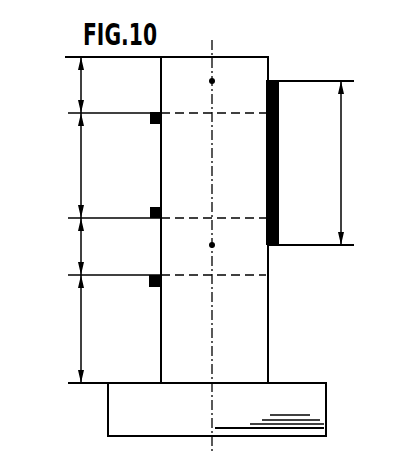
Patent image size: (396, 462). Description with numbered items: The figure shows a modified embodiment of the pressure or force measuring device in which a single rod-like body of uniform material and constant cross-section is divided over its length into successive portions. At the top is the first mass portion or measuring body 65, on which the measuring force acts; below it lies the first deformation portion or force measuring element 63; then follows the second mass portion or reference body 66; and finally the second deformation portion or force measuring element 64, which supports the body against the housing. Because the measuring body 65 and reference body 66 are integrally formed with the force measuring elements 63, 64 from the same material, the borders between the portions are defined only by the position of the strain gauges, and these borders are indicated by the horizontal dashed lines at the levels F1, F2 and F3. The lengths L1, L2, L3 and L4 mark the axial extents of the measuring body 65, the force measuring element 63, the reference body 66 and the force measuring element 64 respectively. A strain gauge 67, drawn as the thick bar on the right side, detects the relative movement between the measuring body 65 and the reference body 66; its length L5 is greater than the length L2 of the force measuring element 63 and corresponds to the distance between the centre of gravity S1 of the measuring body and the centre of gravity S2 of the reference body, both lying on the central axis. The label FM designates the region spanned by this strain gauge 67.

The force measuring element 63 is at (172, 164).
The second force measuring element 64 is at (255, 335).
The measuring body 65 is at (229, 62).
The reference body 66 is at (172, 255).
The strain gauge 67 is at (281, 96).
The measuring range FM is at (305, 129).
The centre of gravity of the measuring body S1 is at (228, 83).
The centre of gravity of the reference body S2 is at (228, 247).
The first force application point F1 is at (150, 118).
The second force application point F2 is at (150, 212).
The third force application point F3 is at (150, 285).
The length L1 is at (68, 85).
The length of the force measuring element L2 is at (68, 165).
The length L3 is at (68, 246).
The length L4 is at (68, 329).
The length of the strain gauge L5 is at (342, 163).